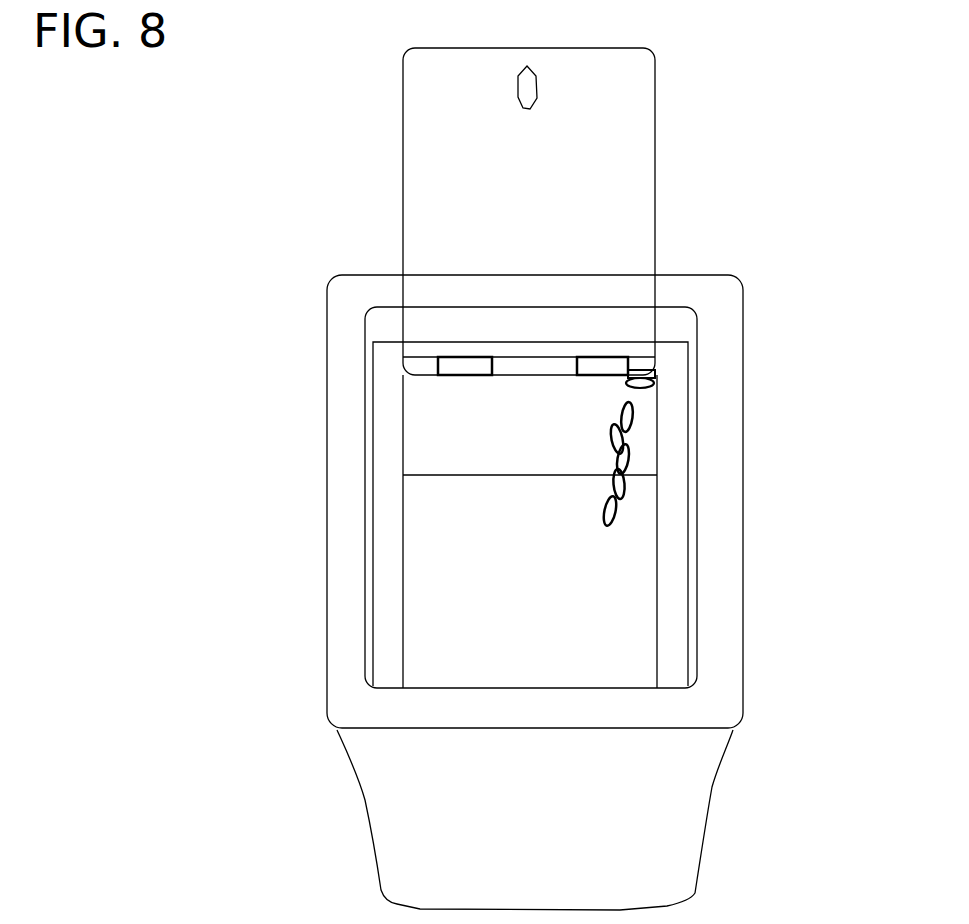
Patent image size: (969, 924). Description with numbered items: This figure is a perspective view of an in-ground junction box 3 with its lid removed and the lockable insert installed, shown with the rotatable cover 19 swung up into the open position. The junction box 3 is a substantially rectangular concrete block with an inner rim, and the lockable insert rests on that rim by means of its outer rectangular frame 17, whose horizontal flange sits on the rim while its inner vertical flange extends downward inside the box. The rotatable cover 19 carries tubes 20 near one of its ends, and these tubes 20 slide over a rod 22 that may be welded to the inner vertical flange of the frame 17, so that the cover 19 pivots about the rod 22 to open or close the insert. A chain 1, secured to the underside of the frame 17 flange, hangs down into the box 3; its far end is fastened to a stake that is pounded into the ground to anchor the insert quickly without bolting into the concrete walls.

The chain 1 is at (657, 375).
The junction box 3 is at (683, 788).
The outer rectangular frame 17 is at (673, 567).
The rotatable cover 19 is at (455, 160).
The tubes 20 is at (593, 373).
The rod 22 is at (423, 368).